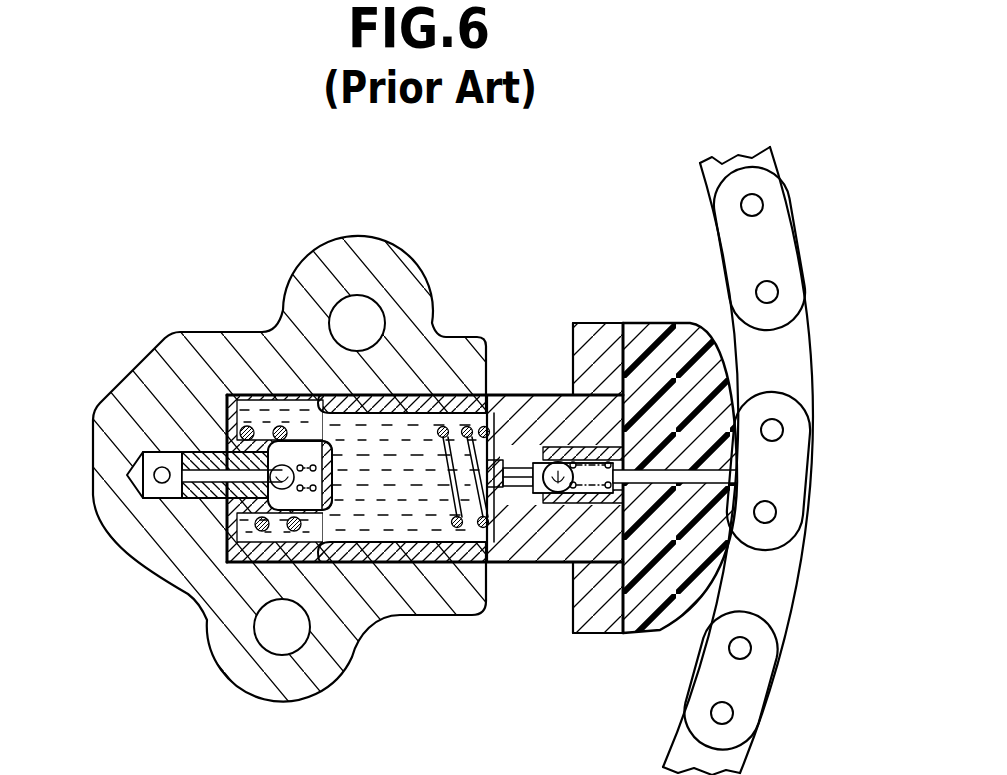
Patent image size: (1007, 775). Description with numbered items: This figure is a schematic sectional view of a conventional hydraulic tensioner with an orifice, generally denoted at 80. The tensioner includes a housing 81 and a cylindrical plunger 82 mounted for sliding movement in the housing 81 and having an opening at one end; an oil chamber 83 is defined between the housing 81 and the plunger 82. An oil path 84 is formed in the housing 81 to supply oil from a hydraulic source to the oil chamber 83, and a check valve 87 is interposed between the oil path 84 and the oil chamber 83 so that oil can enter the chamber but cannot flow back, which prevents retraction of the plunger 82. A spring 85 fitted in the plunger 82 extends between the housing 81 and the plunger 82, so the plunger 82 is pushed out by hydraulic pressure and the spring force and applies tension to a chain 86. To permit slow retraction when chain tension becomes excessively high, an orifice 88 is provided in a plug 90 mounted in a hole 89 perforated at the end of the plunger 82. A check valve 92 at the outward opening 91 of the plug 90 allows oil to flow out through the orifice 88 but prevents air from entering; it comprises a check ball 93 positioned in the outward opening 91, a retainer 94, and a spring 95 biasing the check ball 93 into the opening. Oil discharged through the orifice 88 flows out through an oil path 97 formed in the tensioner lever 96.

The hydraulic tensioner with an orifice 80 is at (481, 454).
The housing 81 is at (216, 352).
The cylindrical plunger 82 is at (500, 563).
The oil chamber 83 is at (265, 540).
The oil path 84 is at (162, 483).
The spring 85 is at (447, 537).
The chain 86 is at (773, 250).
The check valve 87 is at (348, 489).
The orifice 88 is at (522, 484).
The hole 89 is at (519, 456).
The plug 90 is at (535, 497).
The outward opening 91 is at (537, 460).
The check valve 92 is at (563, 434).
The check ball 93 is at (565, 500).
The retainer 94 is at (625, 525).
The spring 95 is at (595, 450).
The tensioner lever 96 is at (697, 535).
The oil path 97 is at (735, 480).